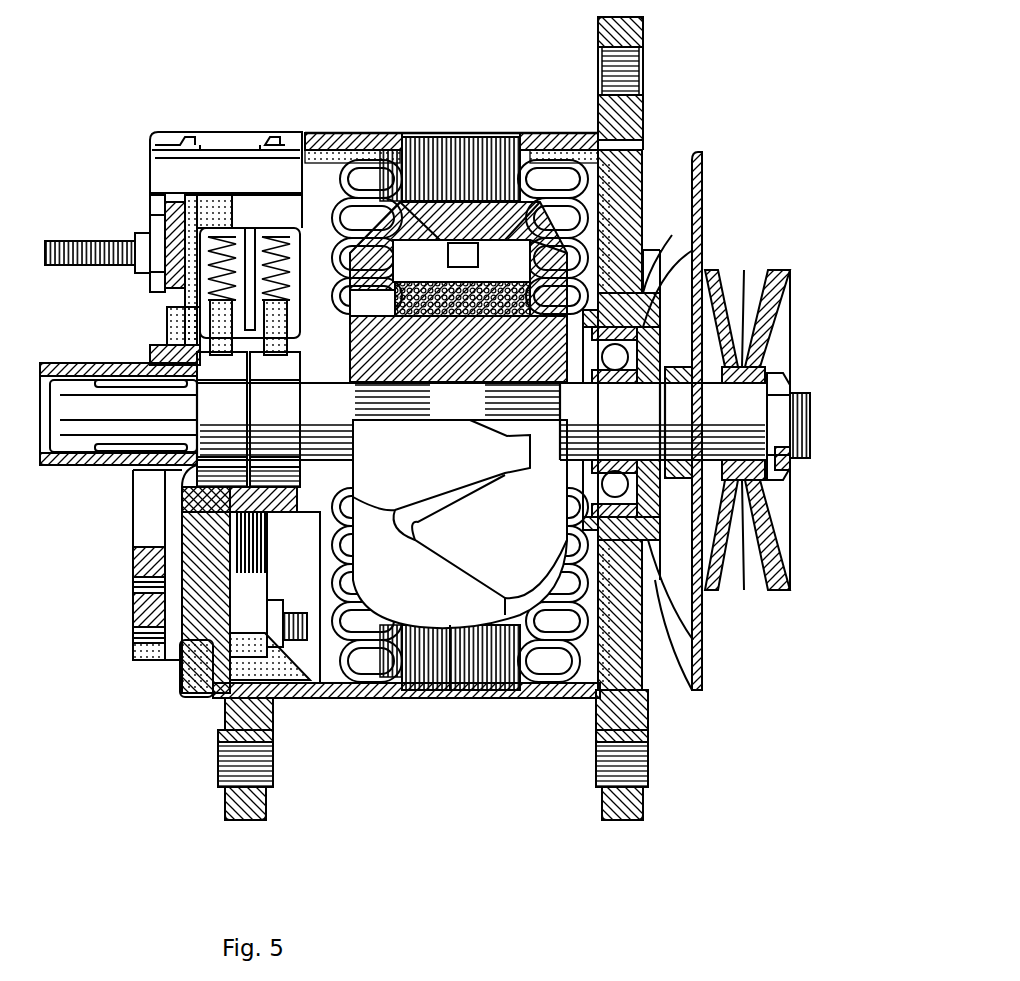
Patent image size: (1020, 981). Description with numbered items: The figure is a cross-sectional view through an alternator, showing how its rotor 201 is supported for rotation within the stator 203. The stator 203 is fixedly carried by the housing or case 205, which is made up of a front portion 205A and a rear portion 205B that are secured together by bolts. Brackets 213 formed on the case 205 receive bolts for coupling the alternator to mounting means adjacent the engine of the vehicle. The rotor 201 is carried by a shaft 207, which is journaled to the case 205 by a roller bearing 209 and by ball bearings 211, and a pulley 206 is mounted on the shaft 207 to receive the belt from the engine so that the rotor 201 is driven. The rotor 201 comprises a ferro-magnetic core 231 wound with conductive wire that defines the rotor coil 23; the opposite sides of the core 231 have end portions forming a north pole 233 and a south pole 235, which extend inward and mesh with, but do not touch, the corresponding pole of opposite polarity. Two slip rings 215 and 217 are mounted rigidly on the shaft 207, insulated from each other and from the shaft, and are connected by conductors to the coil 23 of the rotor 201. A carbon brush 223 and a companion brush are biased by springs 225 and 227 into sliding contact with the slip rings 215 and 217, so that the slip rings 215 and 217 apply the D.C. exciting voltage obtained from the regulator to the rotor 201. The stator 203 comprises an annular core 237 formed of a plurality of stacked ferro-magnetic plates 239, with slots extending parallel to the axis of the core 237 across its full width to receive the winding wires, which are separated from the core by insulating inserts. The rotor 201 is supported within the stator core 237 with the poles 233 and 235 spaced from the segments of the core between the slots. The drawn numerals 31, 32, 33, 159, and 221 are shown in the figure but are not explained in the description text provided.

The rotor coil 23 is at (440, 200).
The rotor 31 is at (595, 182).
The rotor field coil 32 is at (462, 299).
The rotor pole piece 33 is at (460, 525).
The voltage regulator 159 is at (155, 170).
The rotor 201 is at (590, 243).
The stator 203 is at (605, 200).
The housing or case 205 is at (355, 133).
The front portion of case 205A is at (512, 700).
The rear portion of case 205B is at (325, 700).
The pulley 206 is at (780, 570).
The shaft 207 is at (820, 432).
The roller bearing 209 is at (118, 365).
The ball bearings 211 is at (650, 295).
The brackets 213 is at (646, 30).
The slip ring 215 is at (215, 480).
The slip ring 217 is at (275, 515).
The brush holder 221 is at (220, 308).
The carbon brush 223 is at (270, 322).
The spring 225 is at (150, 243).
The spring 227 is at (220, 235).
The ferro-magnetic core 231 is at (530, 300).
The north pole 233 is at (472, 690).
The south pole 235 is at (340, 590).
The annular core 237 is at (505, 700).
The stacked ferro-magnetic plates 239 is at (432, 690).